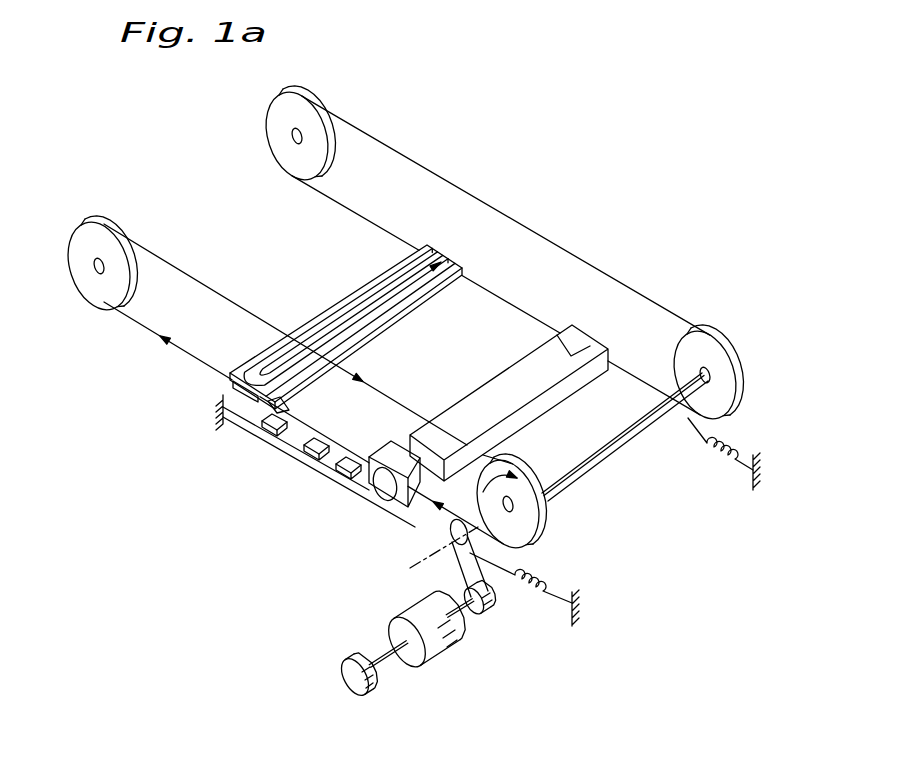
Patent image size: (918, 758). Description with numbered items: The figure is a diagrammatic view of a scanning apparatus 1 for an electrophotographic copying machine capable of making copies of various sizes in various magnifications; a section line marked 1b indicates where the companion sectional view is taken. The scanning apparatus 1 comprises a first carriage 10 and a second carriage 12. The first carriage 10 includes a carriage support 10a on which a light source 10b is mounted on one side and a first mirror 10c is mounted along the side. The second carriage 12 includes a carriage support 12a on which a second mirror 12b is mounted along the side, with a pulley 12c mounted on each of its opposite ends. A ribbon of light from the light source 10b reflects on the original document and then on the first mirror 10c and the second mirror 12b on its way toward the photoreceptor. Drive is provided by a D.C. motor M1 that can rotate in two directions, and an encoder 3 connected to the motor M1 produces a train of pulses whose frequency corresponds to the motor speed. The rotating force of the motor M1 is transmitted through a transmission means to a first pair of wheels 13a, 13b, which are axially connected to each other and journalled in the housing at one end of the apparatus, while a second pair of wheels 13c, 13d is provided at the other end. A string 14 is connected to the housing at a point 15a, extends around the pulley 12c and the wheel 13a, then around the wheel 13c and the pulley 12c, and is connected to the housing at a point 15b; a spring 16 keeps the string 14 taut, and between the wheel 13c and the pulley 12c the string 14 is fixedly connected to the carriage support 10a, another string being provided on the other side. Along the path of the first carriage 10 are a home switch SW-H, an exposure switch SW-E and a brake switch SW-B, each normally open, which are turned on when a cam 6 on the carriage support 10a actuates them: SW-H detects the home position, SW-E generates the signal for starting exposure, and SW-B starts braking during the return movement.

The scanning apparatus 1 is at (502, 260).
The section line 1b- 1b is at (212, 230).
The encoder 3 is at (377, 682).
The cam 6 is at (237, 380).
The first carriage 10 is at (355, 310).
The carriage support 10a is at (413, 305).
The light source 10b is at (392, 280).
The first mirror 10c is at (370, 347).
The second carriage 12 is at (477, 432).
The carriage support 12a is at (555, 395).
The second mirror 12b is at (398, 473).
The pulley 12c is at (388, 490).
The wheel 13a is at (530, 523).
The wheel 13b is at (722, 367).
The wheel 13c is at (102, 293).
The wheel 13d is at (276, 131).
The string 14 is at (415, 518).
The connection point 15a is at (578, 623).
The connection point 15b is at (217, 425).
The spring 16 is at (530, 567).
The D.C. motor M1 is at (457, 657).
The brake switch SW-B is at (263, 428).
The exposure switch SW-E is at (303, 452).
The home switch SW-H is at (343, 473).